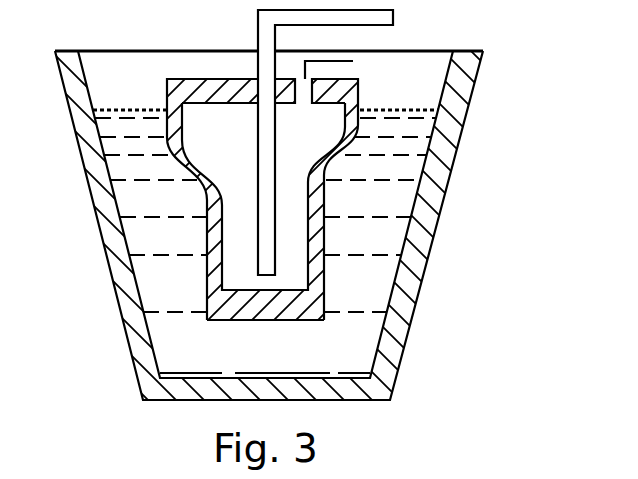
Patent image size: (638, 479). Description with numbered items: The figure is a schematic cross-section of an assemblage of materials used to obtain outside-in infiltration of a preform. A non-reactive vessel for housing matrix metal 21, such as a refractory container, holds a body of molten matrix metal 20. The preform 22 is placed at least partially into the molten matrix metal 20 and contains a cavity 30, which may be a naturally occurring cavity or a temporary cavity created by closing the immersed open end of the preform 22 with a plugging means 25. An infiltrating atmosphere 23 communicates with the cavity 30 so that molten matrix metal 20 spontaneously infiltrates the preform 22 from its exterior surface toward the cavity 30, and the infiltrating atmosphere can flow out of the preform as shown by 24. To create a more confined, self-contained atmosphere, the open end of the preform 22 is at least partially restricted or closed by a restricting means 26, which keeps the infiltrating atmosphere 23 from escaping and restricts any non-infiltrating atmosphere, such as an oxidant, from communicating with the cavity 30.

The molten matrix metal 20 is at (378, 292).
The vessel for housing matrix metal 21 is at (108, 222).
The preform 22 is at (278, 179).
The infiltrating atmosphere 23 is at (412, 17).
The infiltrating atmosphere flow out of the preform 24 is at (357, 69).
The plugging means 25 is at (313, 322).
The restricting means 26 is at (212, 90).
The cavity 30 is at (232, 153).